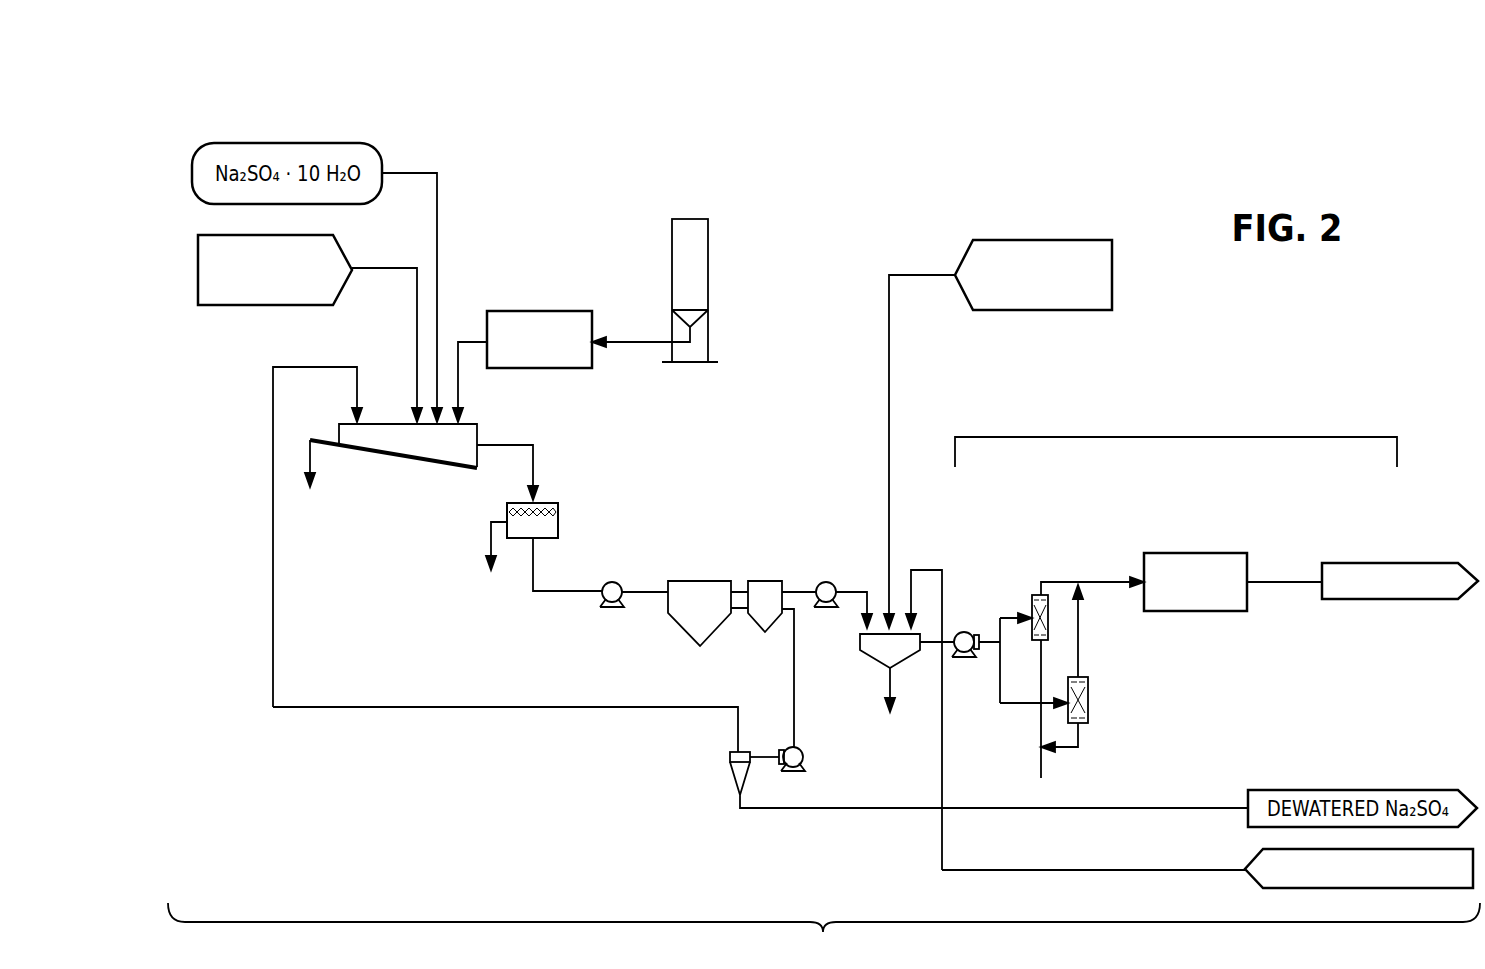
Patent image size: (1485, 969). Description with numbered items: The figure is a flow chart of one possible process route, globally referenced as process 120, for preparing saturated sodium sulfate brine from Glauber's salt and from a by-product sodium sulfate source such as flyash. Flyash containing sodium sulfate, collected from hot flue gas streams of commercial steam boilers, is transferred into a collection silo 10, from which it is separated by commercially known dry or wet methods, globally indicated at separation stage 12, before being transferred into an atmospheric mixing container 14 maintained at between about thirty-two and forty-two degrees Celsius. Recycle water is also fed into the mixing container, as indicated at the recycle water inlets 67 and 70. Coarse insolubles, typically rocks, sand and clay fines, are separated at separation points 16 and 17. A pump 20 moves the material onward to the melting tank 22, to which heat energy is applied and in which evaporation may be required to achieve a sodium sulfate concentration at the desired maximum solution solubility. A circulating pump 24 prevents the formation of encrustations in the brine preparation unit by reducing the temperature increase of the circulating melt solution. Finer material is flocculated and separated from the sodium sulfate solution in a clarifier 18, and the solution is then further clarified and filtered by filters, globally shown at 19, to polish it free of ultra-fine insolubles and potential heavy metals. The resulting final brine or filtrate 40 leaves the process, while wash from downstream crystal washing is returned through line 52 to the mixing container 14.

The collection silo 10 is at (633, 220).
The separation stage 12 is at (527, 311).
The atmospheric mixing container 14 is at (420, 448).
The coarse insolubles separation point 16 is at (312, 458).
The coarse insolubles separation point 17 is at (515, 532).
The clarifier 18 is at (870, 662).
The filters 19 is at (1338, 437).
The pump 20 is at (607, 585).
The melting tank 22 is at (690, 618).
The circulating pump 24 is at (805, 758).
The final brine 40 is at (1370, 600).
The wash return line 52 is at (1062, 870).
The recycle water inlet 67 is at (198, 268).
The recycle water inlet 70 is at (932, 278).
The brine preparation process 120 is at (824, 936).